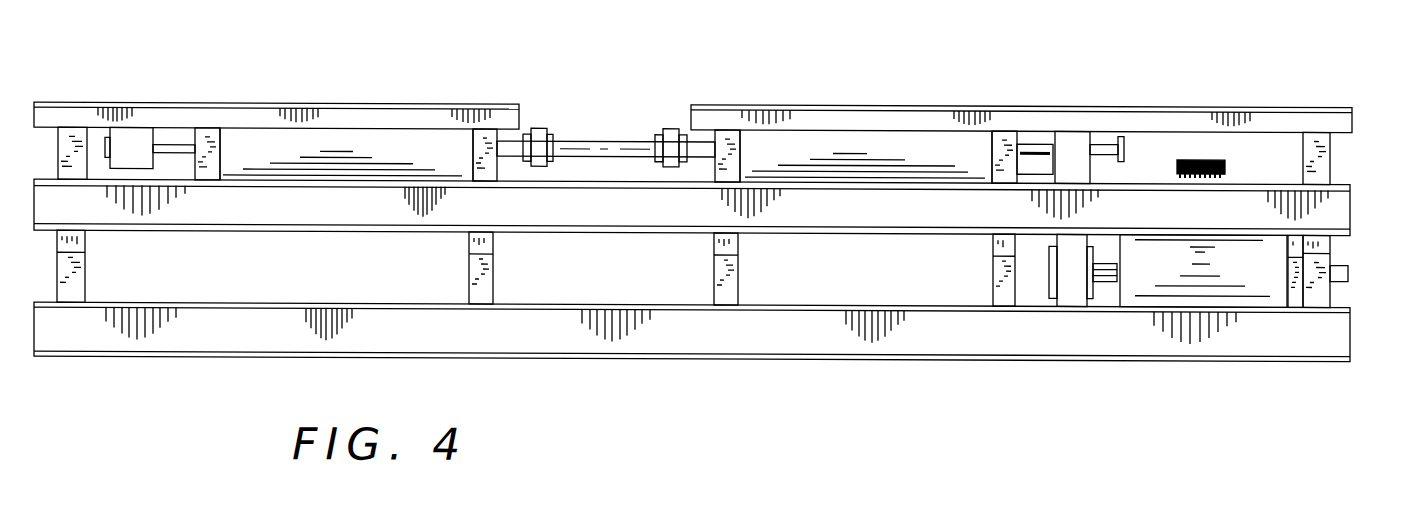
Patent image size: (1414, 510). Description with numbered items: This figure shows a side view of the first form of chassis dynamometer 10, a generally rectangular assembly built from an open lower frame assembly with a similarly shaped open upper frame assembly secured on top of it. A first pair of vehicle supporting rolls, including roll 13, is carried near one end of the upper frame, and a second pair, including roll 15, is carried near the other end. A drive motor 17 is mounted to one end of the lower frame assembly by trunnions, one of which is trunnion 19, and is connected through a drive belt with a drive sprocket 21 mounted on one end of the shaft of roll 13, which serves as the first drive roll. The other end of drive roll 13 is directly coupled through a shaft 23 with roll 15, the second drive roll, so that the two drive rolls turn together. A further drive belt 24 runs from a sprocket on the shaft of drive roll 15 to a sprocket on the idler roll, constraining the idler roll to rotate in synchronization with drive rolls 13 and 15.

The chassis dynamometer 10 is at (795, 101).
The vehicle supporting roll 13 is at (865, 134).
The vehicle supporting roll 15 is at (392, 140).
The drive motor 17 is at (1250, 285).
The trunnion 19 is at (1316, 263).
The drive sprocket 21 is at (1066, 283).
The shaft 23 is at (600, 138).
The drive belt 24 is at (132, 139).